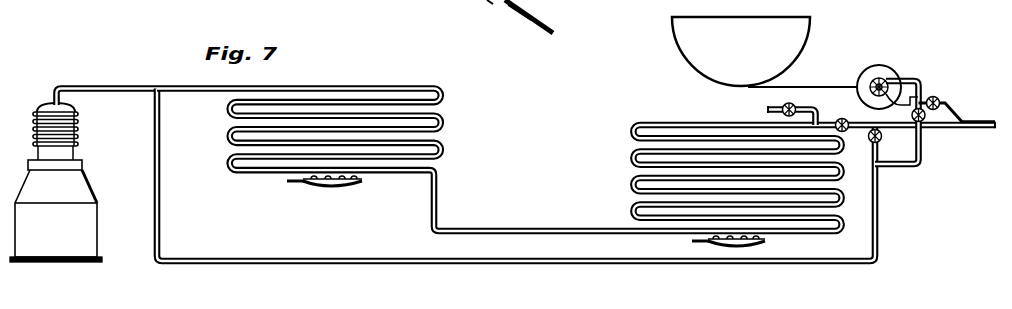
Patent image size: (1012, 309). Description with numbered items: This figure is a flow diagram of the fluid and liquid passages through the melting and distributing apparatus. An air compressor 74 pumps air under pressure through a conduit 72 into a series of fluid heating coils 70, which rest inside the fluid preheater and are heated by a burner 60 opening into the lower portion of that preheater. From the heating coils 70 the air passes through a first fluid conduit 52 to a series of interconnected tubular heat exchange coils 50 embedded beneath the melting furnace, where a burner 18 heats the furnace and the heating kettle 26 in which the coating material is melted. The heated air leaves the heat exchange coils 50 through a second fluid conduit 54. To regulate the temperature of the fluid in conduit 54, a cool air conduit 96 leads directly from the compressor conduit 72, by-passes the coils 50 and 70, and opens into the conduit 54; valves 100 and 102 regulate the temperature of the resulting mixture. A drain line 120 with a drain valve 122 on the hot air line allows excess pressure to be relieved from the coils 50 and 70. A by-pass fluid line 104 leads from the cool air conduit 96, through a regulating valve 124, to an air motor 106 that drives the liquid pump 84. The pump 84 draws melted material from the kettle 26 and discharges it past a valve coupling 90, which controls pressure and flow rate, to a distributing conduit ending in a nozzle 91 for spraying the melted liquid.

The burner 18 is at (765, 241).
The heating kettle 26 is at (795, 43).
The heat exchange coils 50 is at (681, 135).
The first fluid conduit 52 is at (515, 227).
The second fluid conduit 54 is at (939, 128).
The burner 60 is at (332, 187).
The fluid heating coils 70 is at (360, 86).
The conduit 72 is at (127, 88).
The air compressor 74 is at (78, 177).
The liquid pump 84 is at (890, 71).
The valve coupling 90 is at (940, 102).
The nozzle 91 is at (531, 21).
The cool air conduit 96 is at (290, 258).
The valve 100 is at (843, 132).
The valve 102 is at (874, 143).
The by-pass fluid line 104 is at (921, 97).
The air motor 106 is at (870, 94).
The drain line 120 is at (768, 109).
The drain valve 122 is at (784, 104).
The regulating valve 124 is at (914, 113).